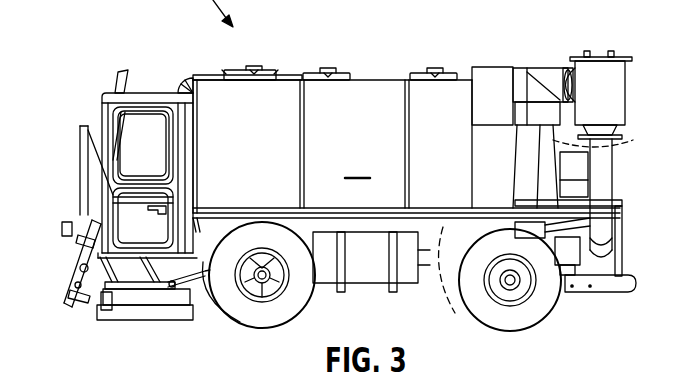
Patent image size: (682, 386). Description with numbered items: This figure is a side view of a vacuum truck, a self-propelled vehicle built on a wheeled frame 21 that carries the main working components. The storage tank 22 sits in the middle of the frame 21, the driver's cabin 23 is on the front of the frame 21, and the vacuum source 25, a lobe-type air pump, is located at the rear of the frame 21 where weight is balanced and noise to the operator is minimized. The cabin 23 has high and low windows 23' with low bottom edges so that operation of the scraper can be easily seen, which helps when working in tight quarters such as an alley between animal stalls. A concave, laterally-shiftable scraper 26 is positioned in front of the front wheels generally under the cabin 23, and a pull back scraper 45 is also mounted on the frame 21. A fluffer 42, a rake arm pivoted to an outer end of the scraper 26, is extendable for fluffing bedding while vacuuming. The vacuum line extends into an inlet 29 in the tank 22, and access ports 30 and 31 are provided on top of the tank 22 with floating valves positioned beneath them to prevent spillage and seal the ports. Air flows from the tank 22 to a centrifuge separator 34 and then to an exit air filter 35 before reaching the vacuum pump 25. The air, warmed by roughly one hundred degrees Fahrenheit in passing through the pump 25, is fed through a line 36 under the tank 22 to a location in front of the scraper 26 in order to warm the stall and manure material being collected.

The frame 21 is at (393, 213).
The storage tank 22 is at (378, 80).
The driver's cabin 23 is at (147, 152).
The high and low windows 23' is at (104, 178).
The vacuum source 25 is at (583, 288).
The laterally-shiftable scraper 26 is at (148, 322).
The inlet 29 is at (240, 70).
The access port 30 is at (338, 72).
The access port 31 is at (440, 72).
The centrifuge separator 34 is at (556, 138).
The exit air filter 35 is at (620, 58).
The line 36 is at (458, 283).
The fluffer 42 is at (126, 70).
The pull back scraper 45 is at (62, 298).